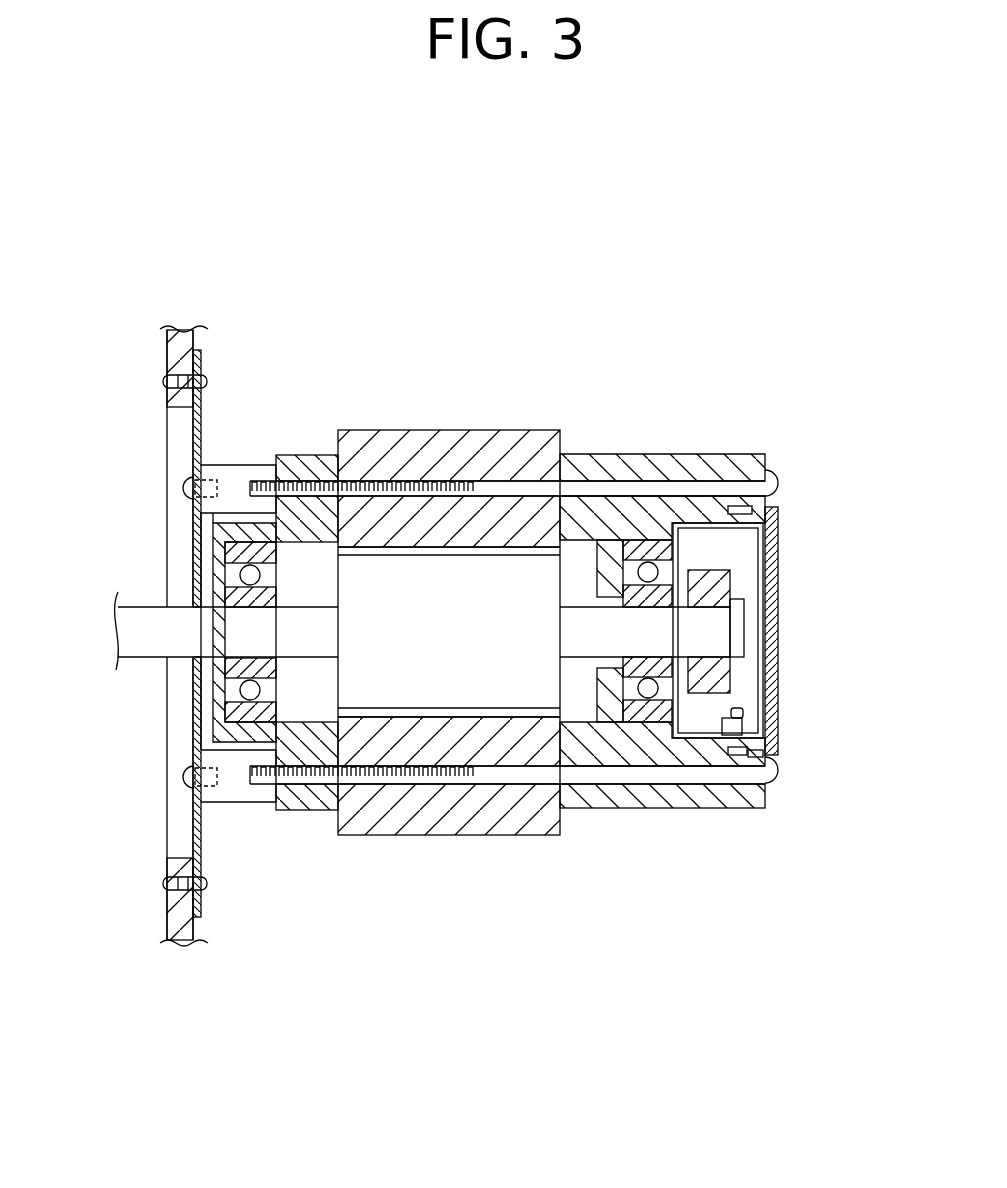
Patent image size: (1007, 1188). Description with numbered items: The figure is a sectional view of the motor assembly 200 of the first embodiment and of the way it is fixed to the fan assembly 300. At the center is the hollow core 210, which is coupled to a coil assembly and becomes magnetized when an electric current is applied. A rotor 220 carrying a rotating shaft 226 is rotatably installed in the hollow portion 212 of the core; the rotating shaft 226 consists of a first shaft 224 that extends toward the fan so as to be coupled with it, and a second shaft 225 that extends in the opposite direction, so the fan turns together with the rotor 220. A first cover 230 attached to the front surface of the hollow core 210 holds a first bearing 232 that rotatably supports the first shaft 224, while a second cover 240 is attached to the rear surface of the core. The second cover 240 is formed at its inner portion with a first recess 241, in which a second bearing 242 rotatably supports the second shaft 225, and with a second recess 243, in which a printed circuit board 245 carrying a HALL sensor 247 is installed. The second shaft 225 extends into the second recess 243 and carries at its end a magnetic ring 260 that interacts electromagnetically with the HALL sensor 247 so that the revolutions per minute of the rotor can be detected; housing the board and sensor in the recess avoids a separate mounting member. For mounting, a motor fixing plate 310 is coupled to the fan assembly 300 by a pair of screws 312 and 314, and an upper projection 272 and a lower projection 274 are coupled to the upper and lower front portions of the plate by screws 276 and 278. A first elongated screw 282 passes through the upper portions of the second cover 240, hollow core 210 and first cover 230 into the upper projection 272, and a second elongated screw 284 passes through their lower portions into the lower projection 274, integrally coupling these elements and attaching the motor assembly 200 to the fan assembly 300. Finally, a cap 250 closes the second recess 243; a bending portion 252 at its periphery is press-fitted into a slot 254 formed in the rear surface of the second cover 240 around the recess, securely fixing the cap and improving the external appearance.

The motor assembly 200 is at (478, 658).
The hollow core 210 is at (449, 614).
The hollow portion 212 is at (497, 550).
The rotor 220 is at (450, 672).
The first shaft 224 is at (325, 622).
The second shaft 225 is at (583, 640).
The rotating shaft 226 is at (429, 772).
The first cover 230 is at (300, 467).
The first bearing 232 is at (253, 553).
The second cover 240 is at (598, 467).
The first recess 241 is at (645, 540).
The second recess 243 is at (722, 537).
The printed circuit board 245 is at (745, 572).
The second bearing 242 is at (660, 712).
The HALL sensor 247 is at (747, 712).
The cap 250 is at (770, 613).
The bending portion 252 is at (765, 758).
The slot 254 is at (737, 756).
The magnetic ring 260 is at (710, 578).
The upper projection 272 is at (223, 468).
The lower projection 274 is at (235, 788).
The screw 276 is at (182, 489).
The screw 278 is at (182, 778).
The first elongated screw 282 is at (778, 483).
The second elongated screw 284 is at (778, 770).
The fan assembly 300 is at (178, 350).
The motor fixing plate 310 is at (202, 847).
The screw 312 is at (165, 382).
The screw 314 is at (165, 883).